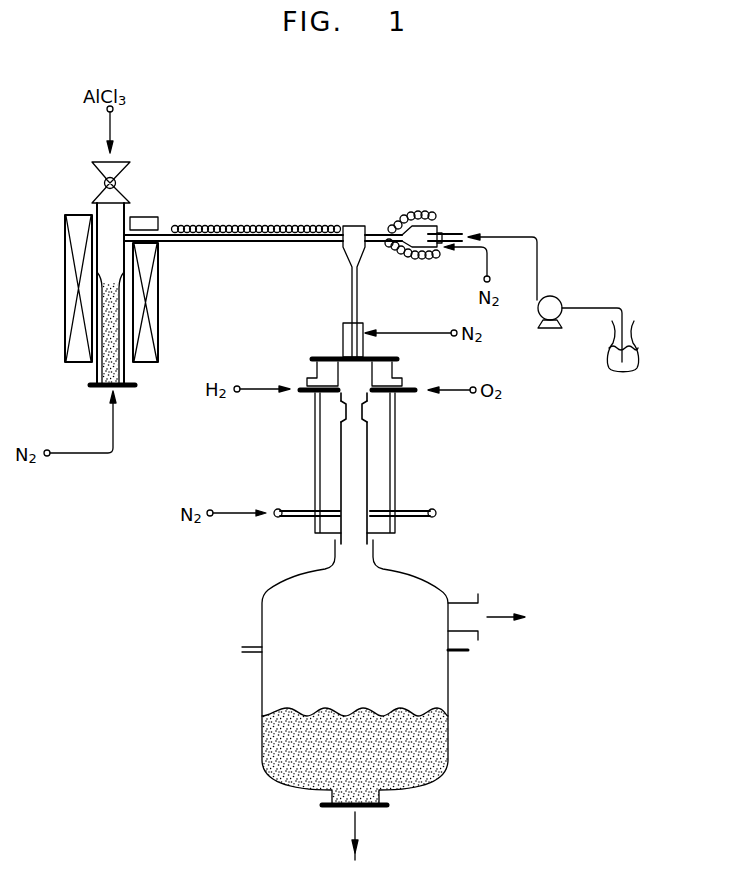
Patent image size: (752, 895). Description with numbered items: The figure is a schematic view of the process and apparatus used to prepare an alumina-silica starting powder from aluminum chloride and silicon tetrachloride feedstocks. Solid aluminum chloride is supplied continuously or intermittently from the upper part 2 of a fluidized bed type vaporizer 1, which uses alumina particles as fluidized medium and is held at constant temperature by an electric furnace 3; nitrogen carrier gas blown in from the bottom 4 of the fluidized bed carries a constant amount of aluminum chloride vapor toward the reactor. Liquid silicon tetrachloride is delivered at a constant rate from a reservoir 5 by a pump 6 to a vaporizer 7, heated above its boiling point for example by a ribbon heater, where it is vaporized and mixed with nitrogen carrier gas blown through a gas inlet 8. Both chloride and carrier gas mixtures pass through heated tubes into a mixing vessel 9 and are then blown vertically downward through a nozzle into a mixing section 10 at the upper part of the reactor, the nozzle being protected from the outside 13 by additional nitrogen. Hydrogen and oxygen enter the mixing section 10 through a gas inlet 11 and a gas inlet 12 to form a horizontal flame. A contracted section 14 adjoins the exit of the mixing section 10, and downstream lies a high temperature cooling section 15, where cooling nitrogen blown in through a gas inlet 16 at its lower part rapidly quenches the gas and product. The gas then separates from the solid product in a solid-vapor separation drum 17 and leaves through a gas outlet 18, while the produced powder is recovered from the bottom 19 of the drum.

The vaporizer 1 is at (117, 257).
The upper part of the vaporizer 2 is at (114, 171).
The electric furnace 3 is at (65, 286).
The bottom of the fluidized bed 4 is at (117, 388).
The SiCl4 reservoir 5 is at (638, 357).
The pump 6 is at (551, 303).
The vaporizer 7 is at (418, 232).
The gas inlet 8 is at (438, 249).
The mixing vessel 9 is at (350, 257).
The mixing section 10 is at (364, 387).
The gas inlet 11 is at (307, 380).
The gas inlet 12 is at (405, 385).
The outside 13 is at (363, 328).
The contracted section 14 is at (362, 408).
The high temperature cooling section 15 is at (353, 463).
The gas inlet 16 is at (279, 509).
The solid-vapor separation drum 17 is at (364, 661).
The gas outlet 18 is at (464, 616).
The bottom of the separation drum 19 is at (358, 795).